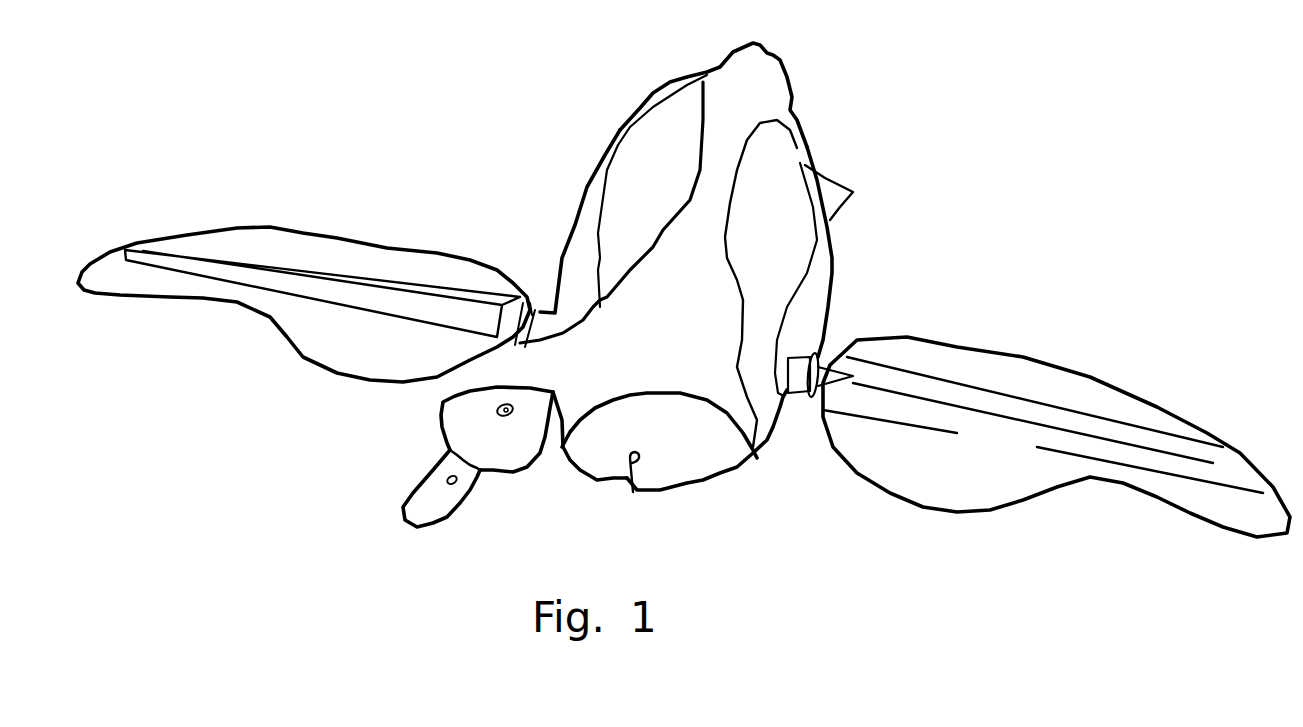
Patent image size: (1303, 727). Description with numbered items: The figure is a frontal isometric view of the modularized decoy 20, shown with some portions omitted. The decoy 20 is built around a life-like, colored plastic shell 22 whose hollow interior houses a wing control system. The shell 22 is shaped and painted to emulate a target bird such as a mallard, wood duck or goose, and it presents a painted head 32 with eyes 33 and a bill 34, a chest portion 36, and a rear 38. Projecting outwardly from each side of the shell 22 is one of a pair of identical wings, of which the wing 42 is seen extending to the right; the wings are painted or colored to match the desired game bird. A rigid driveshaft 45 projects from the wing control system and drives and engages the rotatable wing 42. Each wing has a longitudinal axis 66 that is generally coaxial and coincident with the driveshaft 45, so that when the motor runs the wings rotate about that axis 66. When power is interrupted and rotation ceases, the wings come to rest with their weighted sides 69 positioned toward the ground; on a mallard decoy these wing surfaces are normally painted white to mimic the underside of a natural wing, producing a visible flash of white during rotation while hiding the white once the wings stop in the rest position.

The decoy 20 is at (483, 128).
The plastic shell 22 is at (815, 287).
The painted head 32 is at (503, 463).
The eyes 33 is at (538, 462).
The bill 34 is at (413, 513).
The chest portion 36 is at (698, 470).
The rear 38 is at (772, 77).
The wing 42 is at (1025, 377).
The driveshaft 45 is at (830, 340).
The longitudinal axis 66 is at (1255, 370).
The weighted side 69 is at (337, 338).